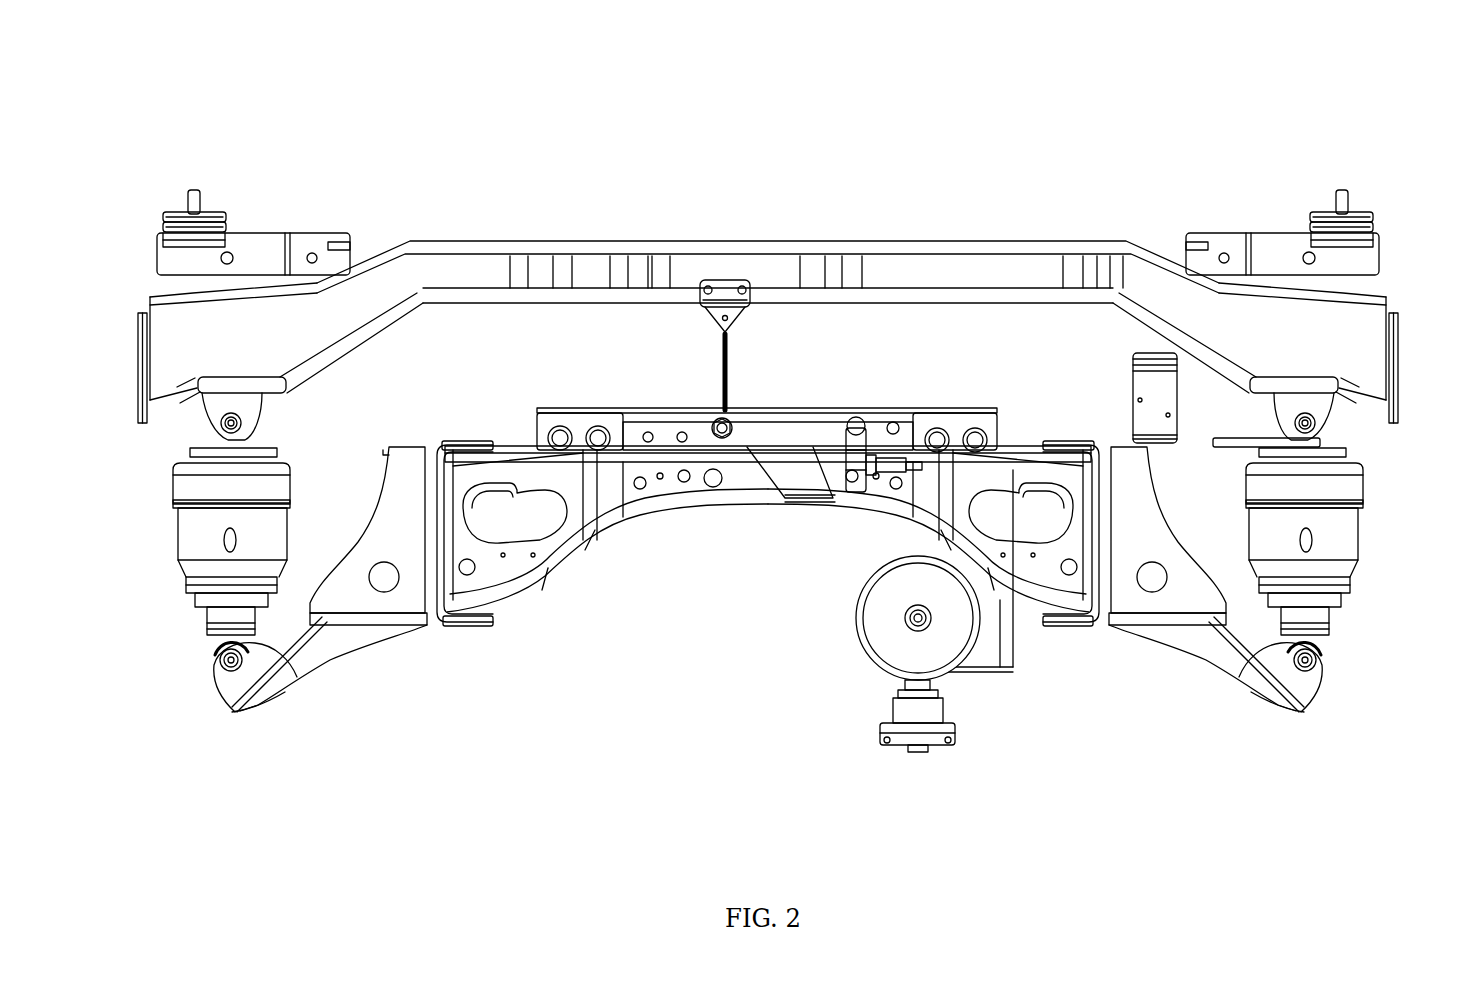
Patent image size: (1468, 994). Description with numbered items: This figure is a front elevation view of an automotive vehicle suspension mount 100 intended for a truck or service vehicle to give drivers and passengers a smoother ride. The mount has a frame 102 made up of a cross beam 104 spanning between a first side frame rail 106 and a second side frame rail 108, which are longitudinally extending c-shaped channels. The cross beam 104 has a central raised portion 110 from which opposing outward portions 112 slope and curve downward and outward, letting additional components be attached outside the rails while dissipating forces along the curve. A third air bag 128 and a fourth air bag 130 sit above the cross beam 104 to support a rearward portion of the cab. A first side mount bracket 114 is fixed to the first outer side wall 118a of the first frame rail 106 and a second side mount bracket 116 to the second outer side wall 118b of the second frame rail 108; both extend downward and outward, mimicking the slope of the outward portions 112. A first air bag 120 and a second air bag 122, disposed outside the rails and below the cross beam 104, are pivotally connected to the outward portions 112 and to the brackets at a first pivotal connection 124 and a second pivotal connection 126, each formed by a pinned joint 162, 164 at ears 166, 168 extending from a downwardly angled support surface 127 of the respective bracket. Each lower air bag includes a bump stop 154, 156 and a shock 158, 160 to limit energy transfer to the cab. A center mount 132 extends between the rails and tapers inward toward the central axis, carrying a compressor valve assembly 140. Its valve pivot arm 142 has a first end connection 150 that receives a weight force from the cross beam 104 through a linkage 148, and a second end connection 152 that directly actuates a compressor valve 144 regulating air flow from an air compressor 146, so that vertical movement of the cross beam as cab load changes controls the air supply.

The automotive vehicle suspension mount 100 is at (1040, 92).
The frame 102 is at (532, 211).
The cross beam 104 is at (640, 282).
The first side frame rail 106 is at (1088, 630).
The second side frame rail 108 is at (467, 628).
The central raised portion 110 is at (914, 272).
The opposing outward portions 112 is at (318, 328).
The first side mount bracket 114 is at (1183, 634).
The second side mount bracket 116 is at (373, 634).
The first outer side wall 118a is at (1160, 638).
The second outer side wall 118b is at (385, 632).
The first air bag 120 is at (1320, 545).
The second air bag 122 is at (208, 567).
The first pivotal connection 124 is at (1330, 670).
The second pivotal connection 126 is at (210, 668).
The downwardly angled support surface 127 is at (290, 655).
The third air bag 128 is at (1330, 210).
The fourth air bag 130 is at (205, 213).
The center mount 132 is at (598, 507).
The compressor valve assembly 140 is at (840, 497).
The valve pivot arm 142 is at (755, 432).
The compressor valve 144 is at (898, 420).
The air compressor 146 is at (852, 640).
The linkage 148 is at (721, 372).
The first end connection 150 is at (713, 426).
The second end connection 152 is at (851, 420).
The bump stop 154 is at (1316, 538).
The bump stop 156 is at (228, 540).
The shock 158 is at (1332, 621).
The shock 160 is at (228, 624).
The pinned joint 162 is at (1312, 680).
The pinned joint 164 is at (222, 680).
The ears 166 is at (1312, 687).
The ears 168 is at (227, 677).